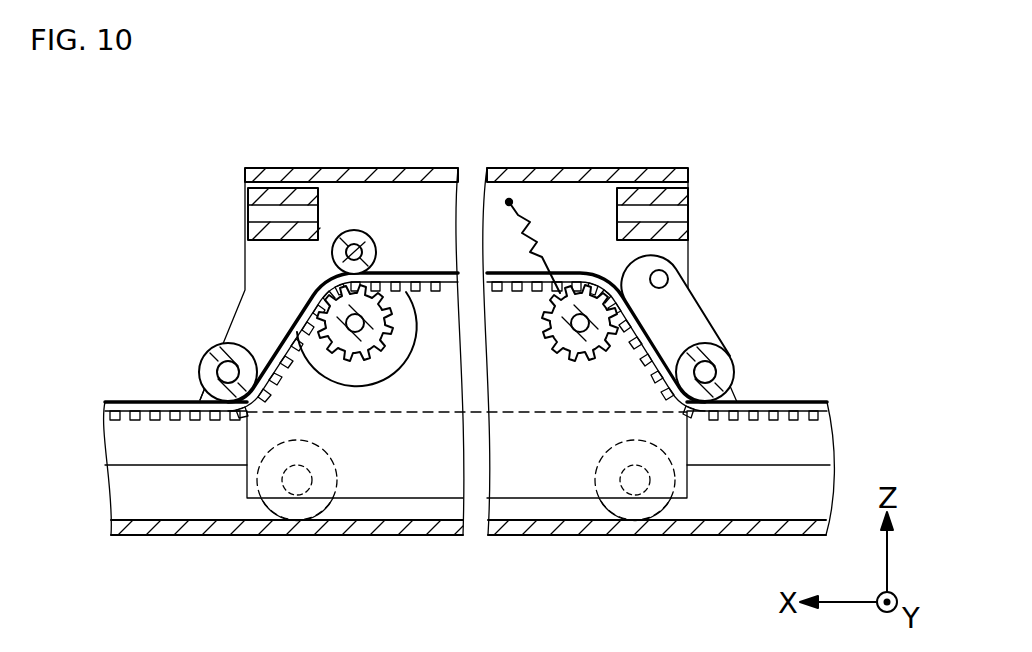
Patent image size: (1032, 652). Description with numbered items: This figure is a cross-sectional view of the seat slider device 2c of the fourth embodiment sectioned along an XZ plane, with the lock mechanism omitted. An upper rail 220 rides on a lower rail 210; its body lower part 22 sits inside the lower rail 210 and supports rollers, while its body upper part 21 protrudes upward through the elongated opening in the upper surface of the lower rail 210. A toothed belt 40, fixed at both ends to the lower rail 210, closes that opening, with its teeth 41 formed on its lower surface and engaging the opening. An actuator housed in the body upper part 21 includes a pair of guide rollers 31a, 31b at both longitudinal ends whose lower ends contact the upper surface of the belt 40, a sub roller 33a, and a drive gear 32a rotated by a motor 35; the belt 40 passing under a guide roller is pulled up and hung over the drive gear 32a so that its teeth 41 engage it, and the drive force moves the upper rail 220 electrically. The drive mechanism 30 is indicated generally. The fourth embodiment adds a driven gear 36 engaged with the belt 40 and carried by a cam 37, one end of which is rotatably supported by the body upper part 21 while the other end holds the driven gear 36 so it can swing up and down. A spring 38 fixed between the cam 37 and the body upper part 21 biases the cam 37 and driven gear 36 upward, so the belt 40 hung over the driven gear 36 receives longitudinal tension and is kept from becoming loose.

The seat slider device 2c is at (188, 139).
The body upper part 21 is at (597, 180).
The body lower part 22 is at (712, 470).
The drive mechanism 30 is at (190, 316).
The guide roller 31a is at (212, 358).
The guide roller 31b is at (720, 352).
The drive gear 32a is at (364, 347).
The sub roller 33a is at (352, 231).
The motor 35 is at (400, 353).
The driven gear 36 is at (570, 347).
The cam 37 is at (668, 262).
The spring 38 is at (545, 248).
The belt 40 is at (130, 402).
The teeth 41 is at (155, 421).
The lower rail 210 is at (183, 530).
The upper rail 220 is at (688, 134).